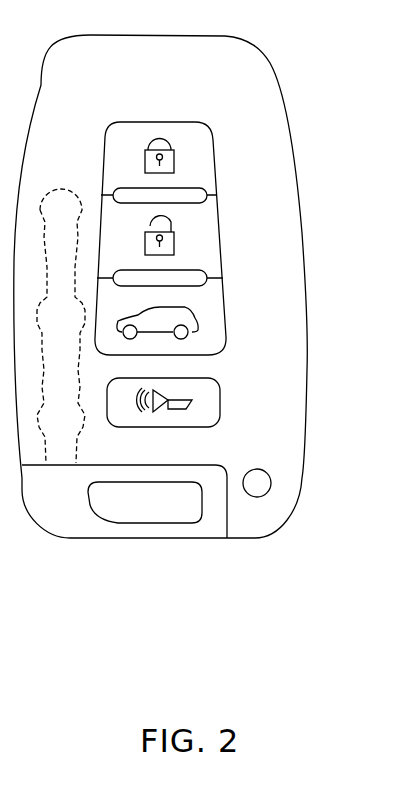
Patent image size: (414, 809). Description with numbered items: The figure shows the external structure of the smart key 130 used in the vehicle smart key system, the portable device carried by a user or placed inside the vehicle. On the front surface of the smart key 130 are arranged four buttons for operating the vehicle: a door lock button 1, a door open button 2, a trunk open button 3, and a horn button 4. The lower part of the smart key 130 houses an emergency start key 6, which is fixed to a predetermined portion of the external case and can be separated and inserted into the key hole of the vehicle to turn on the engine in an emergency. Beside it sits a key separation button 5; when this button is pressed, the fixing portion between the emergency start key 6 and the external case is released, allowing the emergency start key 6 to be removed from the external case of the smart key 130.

The smart key 130 is at (266, 58).
The door lock button 1 is at (205, 163).
The door open button 2 is at (205, 245).
The trunk open button 3 is at (205, 303).
The horn button 4 is at (205, 403).
The key separation button 5 is at (257, 483).
The emergency start key 6 is at (200, 530).